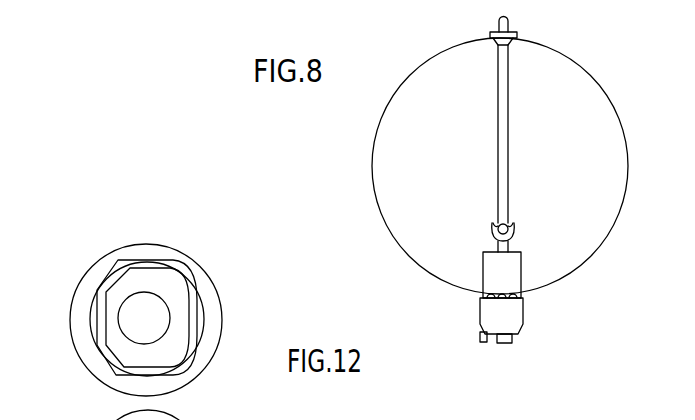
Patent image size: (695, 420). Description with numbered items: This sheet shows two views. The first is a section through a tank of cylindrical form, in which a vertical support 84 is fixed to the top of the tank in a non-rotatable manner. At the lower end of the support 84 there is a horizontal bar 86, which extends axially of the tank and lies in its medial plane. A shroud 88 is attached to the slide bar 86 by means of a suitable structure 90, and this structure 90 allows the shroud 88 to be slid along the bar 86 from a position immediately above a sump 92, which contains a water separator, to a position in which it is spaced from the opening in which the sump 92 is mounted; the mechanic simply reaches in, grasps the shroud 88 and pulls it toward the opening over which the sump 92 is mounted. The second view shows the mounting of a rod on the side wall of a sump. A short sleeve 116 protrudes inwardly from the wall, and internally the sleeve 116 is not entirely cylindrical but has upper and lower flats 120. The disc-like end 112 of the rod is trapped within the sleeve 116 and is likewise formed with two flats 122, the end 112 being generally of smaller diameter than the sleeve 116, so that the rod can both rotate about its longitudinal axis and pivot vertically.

In FIG. 8, the vertical support 84 is at (508, 70).
In FIG. 8, the horizontal bar 86 is at (512, 228).
In FIG. 8, the shroud 88 is at (520, 273).
In FIG. 8, the structure 90 is at (513, 248).
In FIG. 8, the sump 92 is at (523, 332).
In FIG. 12, the disc-like end 112 is at (197, 322).
In FIG. 12, the short sleeve 116 is at (155, 243).
In FIG. 12, the flats 120 is at (163, 262).
In FIG. 12, the flats 122 is at (130, 270).